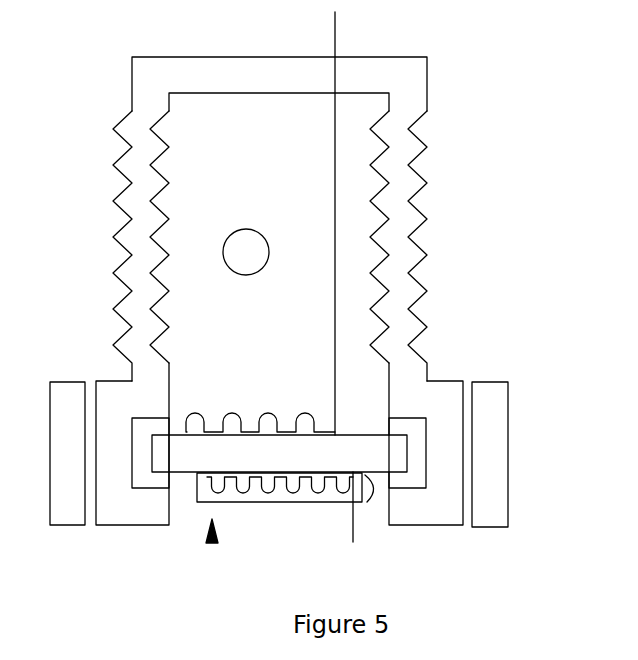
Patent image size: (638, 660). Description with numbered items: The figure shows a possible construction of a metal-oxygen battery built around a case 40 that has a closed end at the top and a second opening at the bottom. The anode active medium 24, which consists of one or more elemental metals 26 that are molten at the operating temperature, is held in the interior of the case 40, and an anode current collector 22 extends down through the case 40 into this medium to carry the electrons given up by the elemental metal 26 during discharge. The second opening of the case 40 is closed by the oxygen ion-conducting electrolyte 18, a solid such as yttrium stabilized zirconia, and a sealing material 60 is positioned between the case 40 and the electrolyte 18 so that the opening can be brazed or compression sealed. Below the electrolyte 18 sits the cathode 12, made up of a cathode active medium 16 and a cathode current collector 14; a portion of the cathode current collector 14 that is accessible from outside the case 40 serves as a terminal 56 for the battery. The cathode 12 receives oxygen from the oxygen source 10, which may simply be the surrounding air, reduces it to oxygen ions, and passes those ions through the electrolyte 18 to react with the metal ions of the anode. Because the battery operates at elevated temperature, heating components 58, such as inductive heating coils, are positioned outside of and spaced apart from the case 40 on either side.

The oxygen source 10 is at (213, 543).
The cathode 12 is at (373, 485).
The cathode current collector 14 is at (240, 478).
The cathode active medium 16 is at (200, 480).
The oxygen ion-conducting electrolyte 18 is at (342, 448).
The anode current collector 22 is at (335, 178).
The anode active medium 24 is at (192, 212).
The elemental metal 26 is at (251, 275).
The case 40 is at (145, 113).
The terminal 56 is at (348, 515).
The heating component 58 is at (82, 508).
The sealing material 60 is at (137, 438).